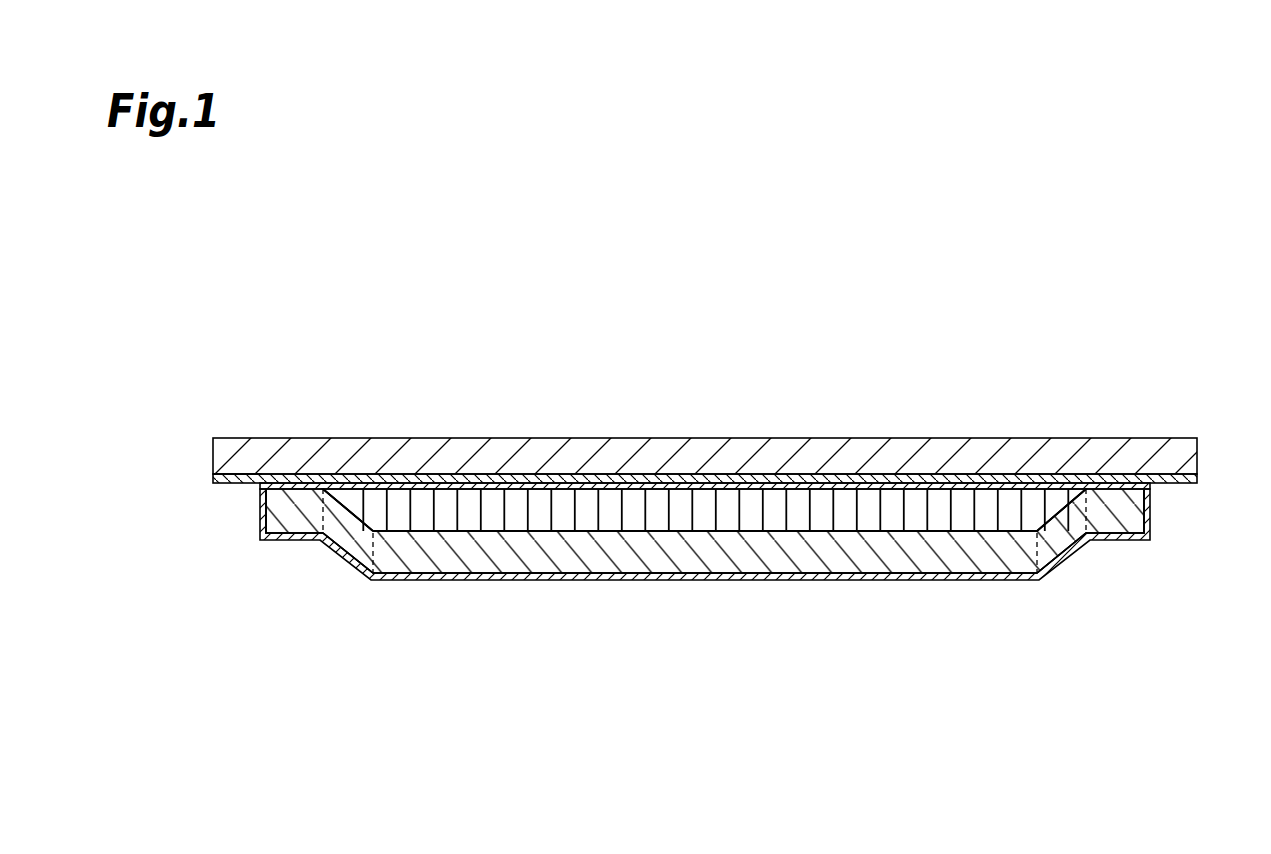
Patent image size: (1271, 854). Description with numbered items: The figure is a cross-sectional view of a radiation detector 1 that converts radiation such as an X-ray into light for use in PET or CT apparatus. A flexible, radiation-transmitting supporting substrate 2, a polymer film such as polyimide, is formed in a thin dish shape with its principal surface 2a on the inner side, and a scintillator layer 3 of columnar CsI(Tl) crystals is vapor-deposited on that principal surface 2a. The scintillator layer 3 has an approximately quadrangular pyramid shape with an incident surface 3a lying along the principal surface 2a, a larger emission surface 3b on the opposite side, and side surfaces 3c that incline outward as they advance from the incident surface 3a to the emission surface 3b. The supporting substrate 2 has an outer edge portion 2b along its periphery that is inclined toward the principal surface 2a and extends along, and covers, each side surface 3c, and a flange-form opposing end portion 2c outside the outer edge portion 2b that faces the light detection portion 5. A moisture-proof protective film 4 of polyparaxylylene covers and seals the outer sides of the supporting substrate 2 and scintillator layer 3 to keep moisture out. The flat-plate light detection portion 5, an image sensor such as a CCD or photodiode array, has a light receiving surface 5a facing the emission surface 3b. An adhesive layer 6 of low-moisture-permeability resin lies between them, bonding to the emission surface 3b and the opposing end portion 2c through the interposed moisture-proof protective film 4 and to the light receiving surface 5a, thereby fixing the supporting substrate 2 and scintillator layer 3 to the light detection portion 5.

The radiation detector 1 is at (328, 330).
The supporting substrate 2 is at (785, 553).
The principal surface 2a is at (967, 533).
The outer edge portion 2b is at (353, 540).
The opposing end portion 2c is at (299, 520).
The scintillator layer 3 is at (849, 518).
The incident surface 3a is at (776, 533).
The emission surface 3b is at (667, 492).
The side surface 3c is at (322, 494).
The moisture-proof protective film 4 is at (910, 576).
The light detection portion 5 is at (881, 456).
The light receiving surface 5a is at (238, 480).
The adhesive layer 6 is at (1196, 480).